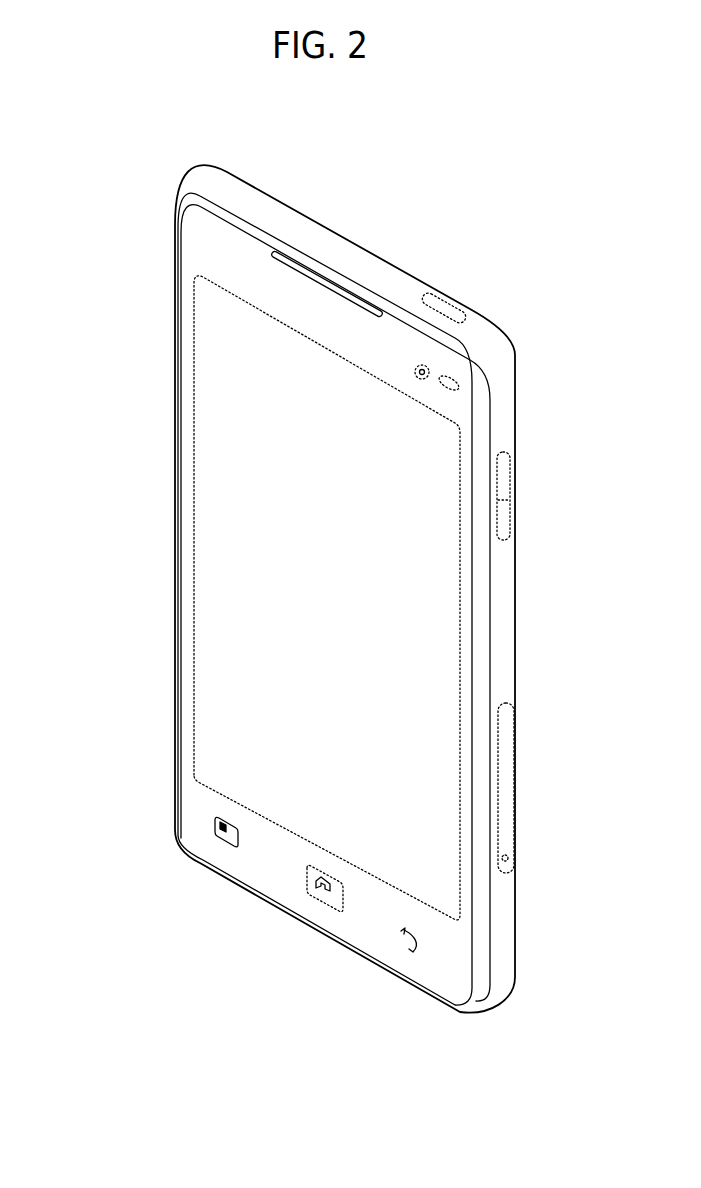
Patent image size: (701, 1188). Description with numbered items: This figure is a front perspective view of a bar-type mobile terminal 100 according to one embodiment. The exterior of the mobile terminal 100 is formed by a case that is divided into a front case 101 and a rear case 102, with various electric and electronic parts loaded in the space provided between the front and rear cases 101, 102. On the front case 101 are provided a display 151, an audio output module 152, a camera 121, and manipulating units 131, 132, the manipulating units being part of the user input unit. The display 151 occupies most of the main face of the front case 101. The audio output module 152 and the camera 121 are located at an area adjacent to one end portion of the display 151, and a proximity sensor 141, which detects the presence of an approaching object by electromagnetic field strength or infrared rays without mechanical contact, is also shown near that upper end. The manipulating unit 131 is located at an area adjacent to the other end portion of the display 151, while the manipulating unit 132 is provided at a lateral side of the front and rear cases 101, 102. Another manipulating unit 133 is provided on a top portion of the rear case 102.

The mobile terminal 100 is at (113, 175).
The front case 101 is at (481, 960).
The rear case 102 is at (503, 361).
The camera 121 is at (429, 372).
The manipulating unit 131 is at (320, 893).
The manipulating unit 132 is at (512, 485).
The manipulating unit 133 is at (444, 308).
The proximity sensor 141 is at (454, 387).
The display 151 is at (212, 560).
The audio output module 152 is at (323, 282).